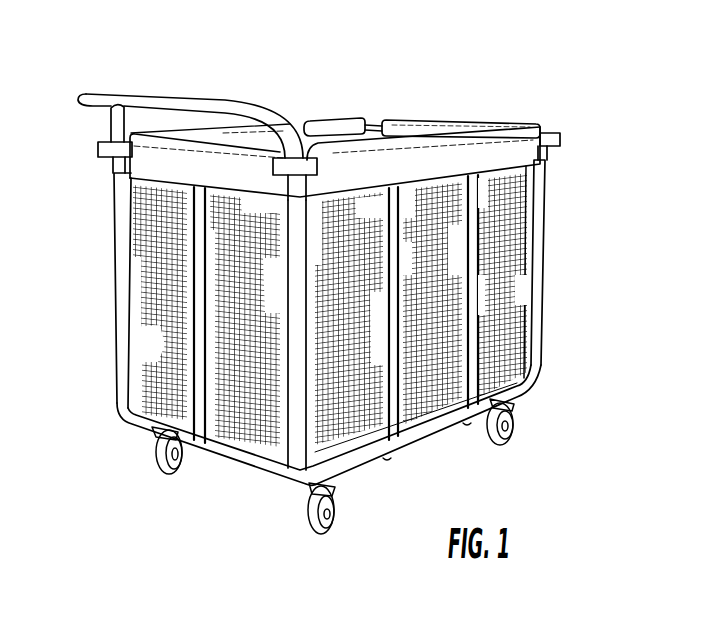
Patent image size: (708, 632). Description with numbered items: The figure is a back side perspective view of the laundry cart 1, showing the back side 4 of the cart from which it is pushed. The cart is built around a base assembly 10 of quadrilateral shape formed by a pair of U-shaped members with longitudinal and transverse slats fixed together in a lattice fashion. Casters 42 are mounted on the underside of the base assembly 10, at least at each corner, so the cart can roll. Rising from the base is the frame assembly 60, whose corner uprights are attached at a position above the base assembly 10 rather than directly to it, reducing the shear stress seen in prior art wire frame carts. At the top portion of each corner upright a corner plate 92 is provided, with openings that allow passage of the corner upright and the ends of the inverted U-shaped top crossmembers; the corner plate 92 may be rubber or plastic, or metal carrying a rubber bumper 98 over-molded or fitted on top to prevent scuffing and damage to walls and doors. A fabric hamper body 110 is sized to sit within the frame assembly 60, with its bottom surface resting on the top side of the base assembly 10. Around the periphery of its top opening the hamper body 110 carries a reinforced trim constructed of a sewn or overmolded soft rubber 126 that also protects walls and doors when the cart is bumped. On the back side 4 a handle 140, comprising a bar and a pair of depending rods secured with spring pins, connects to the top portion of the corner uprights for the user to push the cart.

The laundry cart 1 is at (416, 0).
The back side 4 is at (160, 332).
The base assembly 10 is at (415, 448).
The caster 42 is at (313, 530).
The frame assembly 60 is at (530, 266).
The corner plate 92 is at (545, 128).
The rubber bumper 98 is at (560, 133).
The hamper body 110 is at (443, 212).
The soft rubber 126 is at (413, 123).
The handle 140 is at (133, 92).